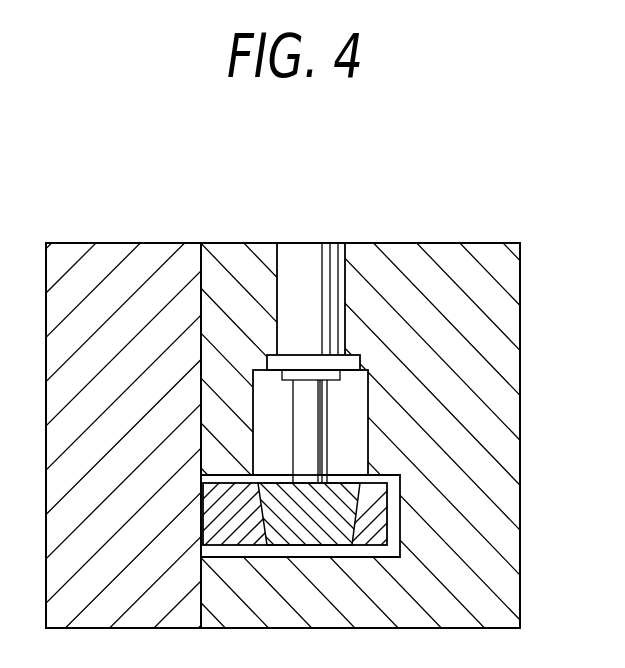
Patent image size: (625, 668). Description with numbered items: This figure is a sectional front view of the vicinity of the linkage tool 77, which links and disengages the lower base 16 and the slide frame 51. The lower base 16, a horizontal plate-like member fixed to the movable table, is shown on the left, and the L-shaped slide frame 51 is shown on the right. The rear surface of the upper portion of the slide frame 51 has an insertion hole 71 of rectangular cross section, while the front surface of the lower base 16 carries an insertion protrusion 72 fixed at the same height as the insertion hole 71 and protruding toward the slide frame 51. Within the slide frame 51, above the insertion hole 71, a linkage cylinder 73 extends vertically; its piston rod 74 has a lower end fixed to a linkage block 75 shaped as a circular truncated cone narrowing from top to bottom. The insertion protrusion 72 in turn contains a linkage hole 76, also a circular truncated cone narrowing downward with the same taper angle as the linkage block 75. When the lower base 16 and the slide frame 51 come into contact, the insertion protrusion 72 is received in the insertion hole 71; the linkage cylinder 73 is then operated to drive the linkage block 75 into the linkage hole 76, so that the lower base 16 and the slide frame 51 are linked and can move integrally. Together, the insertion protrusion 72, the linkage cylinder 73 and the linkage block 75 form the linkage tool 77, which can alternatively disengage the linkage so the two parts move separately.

The lower base 16 is at (153, 263).
The slide frame 51 is at (430, 268).
The linkage tool 77 is at (266, 233).
The linkage cylinder 73 is at (322, 262).
The piston rod 74 is at (312, 432).
The linkage block 75 is at (362, 490).
The insertion hole 71 is at (402, 498).
The insertion protrusion 72 is at (226, 517).
The linkage hole 76 is at (352, 522).